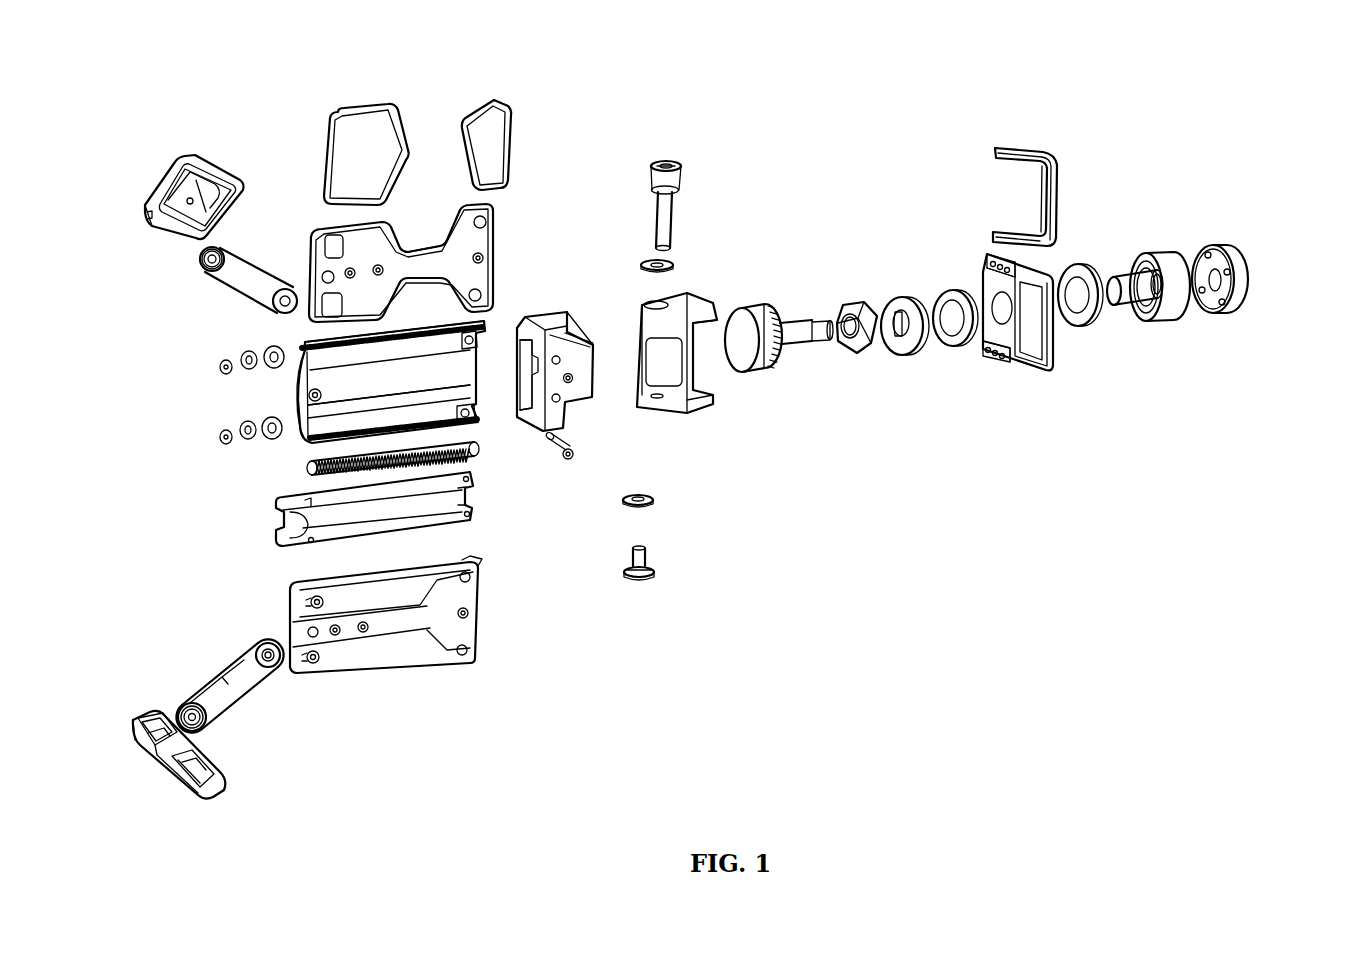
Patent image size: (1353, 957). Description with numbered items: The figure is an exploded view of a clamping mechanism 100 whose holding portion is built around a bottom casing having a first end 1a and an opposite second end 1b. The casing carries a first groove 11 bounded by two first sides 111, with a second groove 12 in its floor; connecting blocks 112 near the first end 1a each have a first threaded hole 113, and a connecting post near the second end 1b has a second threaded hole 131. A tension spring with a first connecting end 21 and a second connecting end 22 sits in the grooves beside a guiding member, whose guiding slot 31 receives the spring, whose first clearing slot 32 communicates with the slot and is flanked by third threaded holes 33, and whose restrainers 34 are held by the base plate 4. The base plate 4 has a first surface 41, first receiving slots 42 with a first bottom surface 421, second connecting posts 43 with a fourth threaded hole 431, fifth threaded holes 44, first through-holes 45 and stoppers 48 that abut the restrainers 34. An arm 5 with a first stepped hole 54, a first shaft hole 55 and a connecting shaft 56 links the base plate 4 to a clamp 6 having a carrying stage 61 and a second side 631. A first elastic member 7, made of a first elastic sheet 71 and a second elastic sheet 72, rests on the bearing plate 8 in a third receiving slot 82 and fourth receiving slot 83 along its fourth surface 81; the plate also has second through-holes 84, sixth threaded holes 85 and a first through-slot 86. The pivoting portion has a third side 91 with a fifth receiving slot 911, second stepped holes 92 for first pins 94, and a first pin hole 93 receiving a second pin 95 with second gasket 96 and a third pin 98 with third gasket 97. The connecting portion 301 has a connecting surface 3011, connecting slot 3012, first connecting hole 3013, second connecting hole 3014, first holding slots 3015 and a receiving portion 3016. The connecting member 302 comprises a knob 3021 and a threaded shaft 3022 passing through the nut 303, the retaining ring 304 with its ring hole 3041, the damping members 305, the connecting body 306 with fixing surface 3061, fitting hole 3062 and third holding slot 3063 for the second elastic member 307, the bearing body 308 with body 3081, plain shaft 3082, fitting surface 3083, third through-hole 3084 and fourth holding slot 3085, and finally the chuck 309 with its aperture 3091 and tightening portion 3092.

The clamping mechanism 100 is at (728, 82).
The first end 1a is at (477, 336).
The second end 1b is at (302, 362).
The first groove 11 is at (354, 395).
The second groove 12 is at (306, 438).
The first sides 111 is at (470, 416).
The connecting block 112 is at (498, 368).
The first threaded hole 113 is at (460, 332).
The second threaded hole 131 is at (298, 399).
The first connecting end 21 is at (310, 477).
The second connecting end 22 is at (372, 471).
The guiding slot 31 is at (302, 527).
The first clearing slot 32 is at (374, 531).
The third threaded hole 33 is at (472, 521).
The restrainer 34 is at (310, 546).
The base plate 4 is at (386, 634).
The first surface 41 is at (470, 596).
The first receiving slot 42 is at (416, 650).
The first bottom surface 421 is at (388, 584).
The second connecting post 43 is at (308, 668).
The fourth threaded hole 431 is at (328, 664).
The fifth threaded hole 44 is at (468, 615).
The first through-hole 45 is at (468, 648).
The stopper 48 is at (470, 557).
The arm 5 is at (214, 280).
The first stepped hole 54 is at (221, 695).
The first shaft hole 55 is at (200, 262).
The connecting shaft 56 is at (205, 730).
The clamp 6 is at (178, 172).
The carrying stage 61 is at (195, 738).
The second side 631 is at (186, 784).
The first elastic member 7 is at (428, 65).
The first elastic sheet 71 is at (358, 116).
The second elastic sheet 72 is at (483, 100).
The bearing plate 8 is at (400, 260).
The fourth surface 81 is at (427, 258).
The third receiving slot 82 is at (480, 270).
The fourth receiving slot 83 is at (323, 268).
The second through-hole 84 is at (493, 219).
The sixth threaded hole 85 is at (485, 256).
The first through-slot 86 is at (330, 225).
The third side 91 is at (516, 420).
The fifth receiving slot 911 is at (512, 332).
The second stepped hole 92 is at (558, 379).
The first pin hole 93 is at (588, 320).
The first pin 94 is at (553, 455).
The second pin 95 is at (676, 179).
The second gasket 96 is at (666, 263).
The third gasket 97 is at (640, 510).
The third pin 98 is at (650, 572).
The connecting portion 301 is at (704, 399).
The connecting surface 3011 is at (680, 355).
The connecting slot 3012 is at (736, 350).
The first connecting hole 3013 is at (652, 390).
The second connecting hole 3014 is at (655, 300).
The first holding slot 3015 is at (700, 392).
The receiving portion 3016 is at (716, 355).
The connecting member 302 is at (782, 320).
The knob 3021 is at (757, 320).
The threaded shaft 3022 is at (800, 360).
The nut 303 is at (852, 352).
The retaining ring 304 is at (869, 350).
The ring hole 3041 is at (896, 330).
The damping member 305 is at (948, 346).
The connecting body 306 is at (975, 347).
The fixing surface 3061 is at (988, 288).
The fitting hole 3062 is at (990, 360).
The third holding slot 3063 is at (1006, 284).
The second elastic member 307 is at (1017, 148).
The bearing body 308 is at (1180, 295).
The plain shaft 3082 is at (1158, 280).
The fitting surface 3083 is at (1140, 318).
The third through-hole 3084 is at (1115, 298).
The fourth holding slot 3085 is at (1152, 320).
The chuck 309 is at (1256, 301).
The body 3081 is at (1205, 272).
The aperture 3091 is at (1222, 292).
The tightening portion 3092 is at (1232, 284).